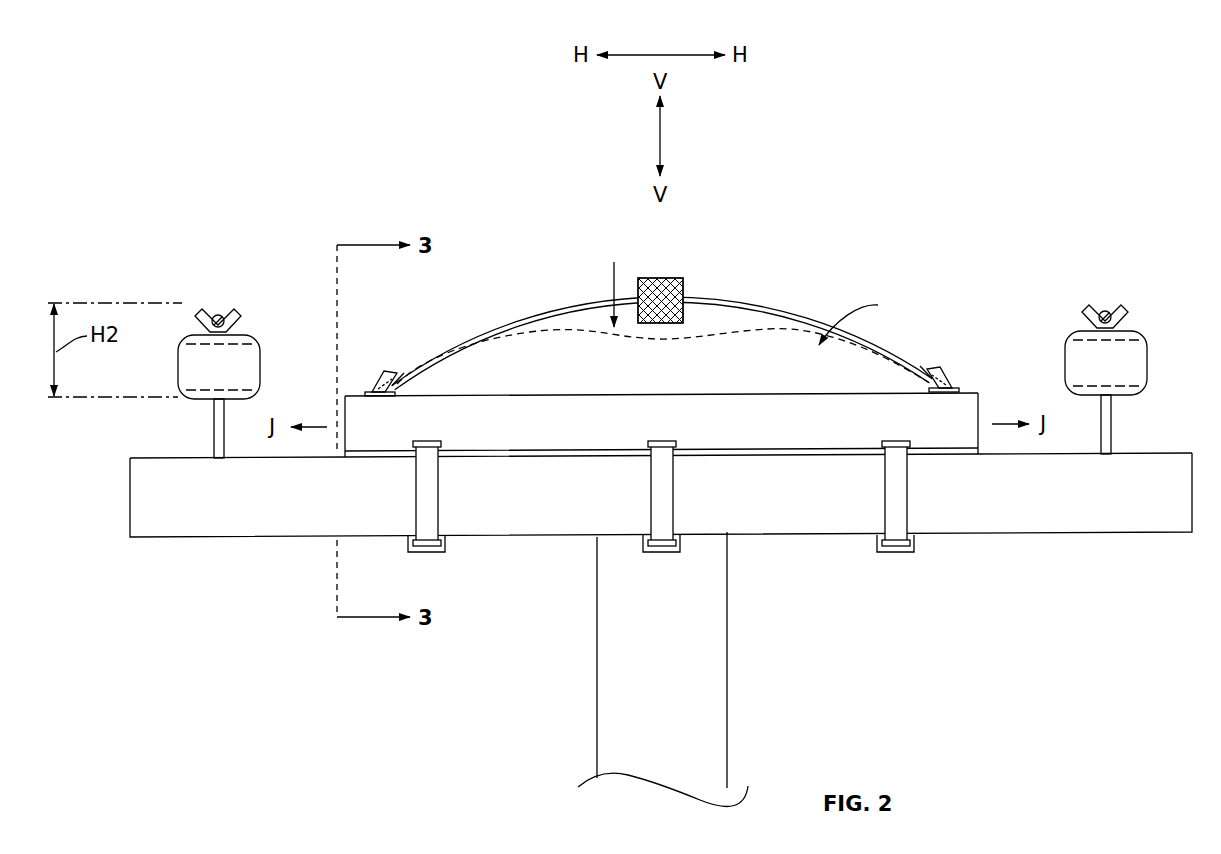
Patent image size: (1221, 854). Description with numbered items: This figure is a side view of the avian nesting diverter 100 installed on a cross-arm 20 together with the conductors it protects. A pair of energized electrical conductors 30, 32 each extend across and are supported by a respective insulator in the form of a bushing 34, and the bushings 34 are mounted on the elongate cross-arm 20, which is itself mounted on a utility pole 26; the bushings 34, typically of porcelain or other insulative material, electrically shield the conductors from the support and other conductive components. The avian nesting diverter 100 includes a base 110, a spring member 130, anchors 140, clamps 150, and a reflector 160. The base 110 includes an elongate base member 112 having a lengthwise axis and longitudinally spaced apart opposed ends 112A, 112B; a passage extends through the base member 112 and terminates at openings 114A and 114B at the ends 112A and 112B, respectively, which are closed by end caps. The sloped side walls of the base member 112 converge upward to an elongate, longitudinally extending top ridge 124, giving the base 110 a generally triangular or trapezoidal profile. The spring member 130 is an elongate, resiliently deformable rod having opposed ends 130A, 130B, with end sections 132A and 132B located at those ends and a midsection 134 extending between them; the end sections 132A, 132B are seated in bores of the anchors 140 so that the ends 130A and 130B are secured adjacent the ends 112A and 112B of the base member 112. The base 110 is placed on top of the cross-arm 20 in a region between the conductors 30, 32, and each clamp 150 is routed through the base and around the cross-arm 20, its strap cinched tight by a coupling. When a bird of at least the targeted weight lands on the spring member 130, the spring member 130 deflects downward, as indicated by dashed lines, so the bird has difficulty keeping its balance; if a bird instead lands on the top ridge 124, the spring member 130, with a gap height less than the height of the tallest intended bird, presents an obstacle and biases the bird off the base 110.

The cross-arm 20 is at (661, 513).
The utility pole 26 is at (718, 647).
The electrical conductor 30 is at (222, 315).
The electrical conductor 32 is at (1106, 311).
The bushing 34 is at (206, 388).
The avian nesting diverter 100 is at (669, 386).
The base 110 is at (558, 453).
The base member 112 is at (669, 481).
The end 112A is at (345, 412).
The end 112B is at (966, 388).
The opening 114A is at (322, 443).
The opening 114B is at (994, 440).
The top ridge 124 is at (690, 392).
The spring member 130 is at (678, 319).
The end 130A is at (397, 389).
The end 130B is at (794, 355).
The end section 132A is at (381, 386).
The end section 132B is at (947, 384).
The midsection 134 is at (762, 299).
The anchor 140 is at (386, 376).
The clamp 150 is at (425, 498).
The reflector 160 is at (665, 278).